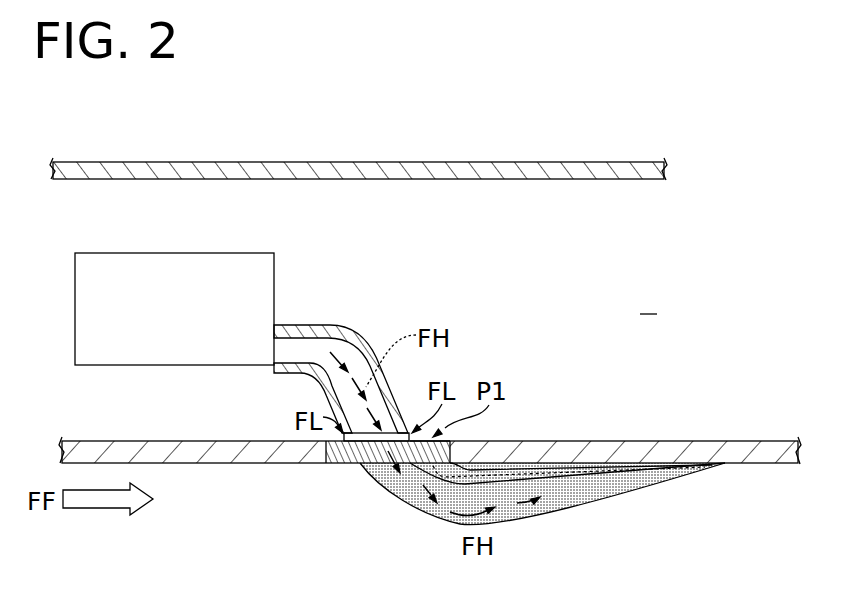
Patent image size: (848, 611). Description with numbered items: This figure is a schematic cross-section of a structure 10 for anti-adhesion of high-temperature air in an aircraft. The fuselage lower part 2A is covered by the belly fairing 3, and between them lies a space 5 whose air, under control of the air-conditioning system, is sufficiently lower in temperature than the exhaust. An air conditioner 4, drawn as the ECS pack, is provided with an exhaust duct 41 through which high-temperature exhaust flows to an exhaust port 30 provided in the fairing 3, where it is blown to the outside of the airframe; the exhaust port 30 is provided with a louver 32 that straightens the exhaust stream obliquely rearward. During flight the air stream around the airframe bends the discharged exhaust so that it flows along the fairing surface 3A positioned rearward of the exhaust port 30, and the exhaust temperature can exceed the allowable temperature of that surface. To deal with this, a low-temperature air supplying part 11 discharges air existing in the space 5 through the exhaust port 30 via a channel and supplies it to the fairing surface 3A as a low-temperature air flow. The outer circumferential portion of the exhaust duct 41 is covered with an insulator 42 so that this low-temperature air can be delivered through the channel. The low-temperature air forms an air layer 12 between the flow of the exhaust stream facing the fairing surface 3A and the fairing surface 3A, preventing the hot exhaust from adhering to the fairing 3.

The lower part of the fuselage 2A is at (567, 179).
The belly fairing 3 is at (178, 463).
The fairing surface 3A is at (750, 463).
The air conditioner 4 is at (184, 253).
The space 5 is at (648, 301).
The structure for anti-adhesion of high-temperature air 10 is at (401, 340).
The low-temperature air supplying part 11 is at (505, 366).
The air layer 12 is at (553, 441).
The exhaust port 30 is at (338, 463).
The louver 32 is at (356, 463).
The exhaust duct 41 is at (304, 325).
The insulator 42 is at (353, 330).